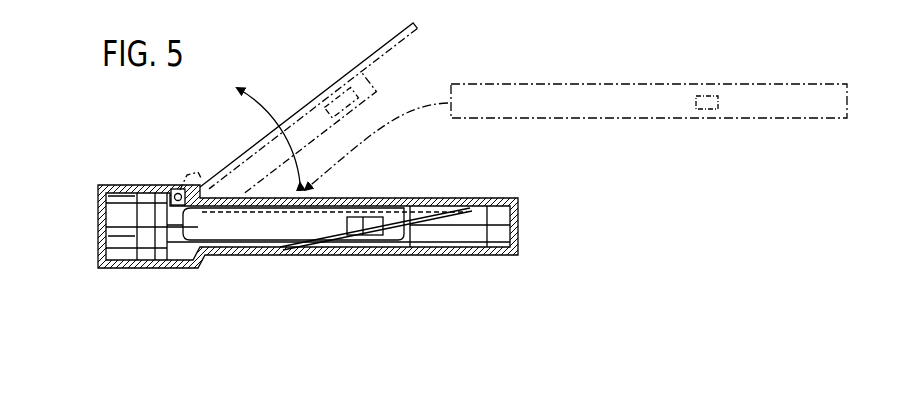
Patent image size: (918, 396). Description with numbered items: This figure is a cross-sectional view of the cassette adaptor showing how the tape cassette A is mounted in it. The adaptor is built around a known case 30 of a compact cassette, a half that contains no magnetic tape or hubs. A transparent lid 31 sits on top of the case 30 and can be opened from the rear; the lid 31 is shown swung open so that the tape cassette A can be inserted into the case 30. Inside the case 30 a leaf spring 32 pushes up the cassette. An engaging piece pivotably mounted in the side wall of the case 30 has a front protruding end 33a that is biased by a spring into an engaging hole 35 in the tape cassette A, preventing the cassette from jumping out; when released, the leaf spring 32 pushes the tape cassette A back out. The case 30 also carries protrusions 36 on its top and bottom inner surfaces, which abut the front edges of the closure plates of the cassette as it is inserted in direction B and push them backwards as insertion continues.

The case 30 is at (440, 255).
The transparent lid 31 is at (300, 107).
The leaf spring 32 is at (420, 205).
The front protruding end 33a is at (350, 245).
The engaging hole 35 is at (713, 110).
The protrusions 36 is at (147, 246).
The tape cassette A is at (603, 96).
The direction of insertion B is at (268, 262).